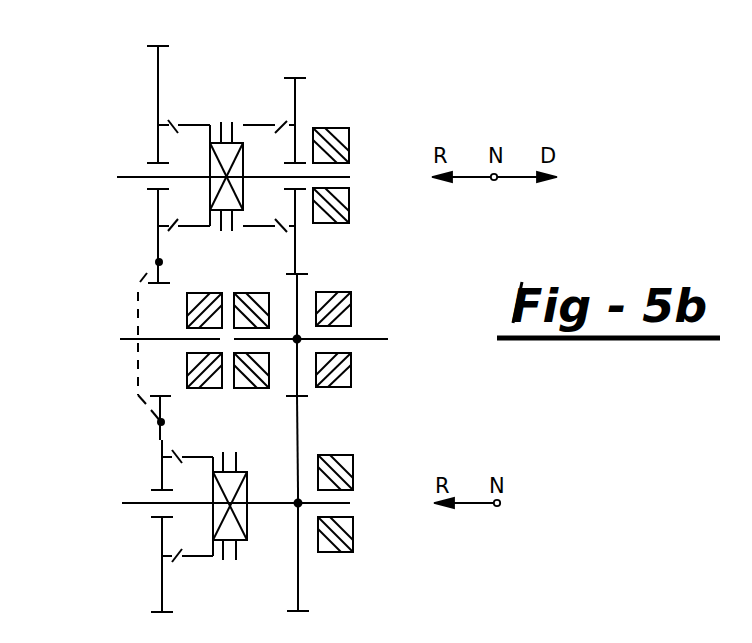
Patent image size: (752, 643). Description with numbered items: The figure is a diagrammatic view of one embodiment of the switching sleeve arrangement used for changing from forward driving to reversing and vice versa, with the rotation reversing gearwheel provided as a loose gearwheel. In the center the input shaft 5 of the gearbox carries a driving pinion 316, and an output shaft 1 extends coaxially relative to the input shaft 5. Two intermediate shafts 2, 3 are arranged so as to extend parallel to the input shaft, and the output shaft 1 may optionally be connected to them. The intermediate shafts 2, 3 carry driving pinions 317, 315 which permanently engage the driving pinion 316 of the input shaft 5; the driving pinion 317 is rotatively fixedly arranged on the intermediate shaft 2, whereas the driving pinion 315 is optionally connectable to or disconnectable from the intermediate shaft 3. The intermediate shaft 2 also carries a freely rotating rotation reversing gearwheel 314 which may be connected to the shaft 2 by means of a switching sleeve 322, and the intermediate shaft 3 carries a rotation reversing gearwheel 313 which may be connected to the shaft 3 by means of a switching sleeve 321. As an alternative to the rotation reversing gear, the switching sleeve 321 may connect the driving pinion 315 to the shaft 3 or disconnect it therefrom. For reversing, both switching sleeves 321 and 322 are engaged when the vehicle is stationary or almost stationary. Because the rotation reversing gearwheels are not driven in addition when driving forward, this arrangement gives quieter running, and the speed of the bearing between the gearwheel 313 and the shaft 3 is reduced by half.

The rotation reversing gearwheel 313 is at (158, 78).
The driving pinion 315 is at (295, 100).
The switching sleeve 321 is at (228, 122).
The intermediate shaft 3 is at (130, 176).
The output shaft 1 is at (153, 340).
The driving pinion 316 is at (297, 295).
The input shaft 5 is at (371, 341).
The intermediate shaft 2 is at (137, 503).
The rotation reversing gearwheel 314 is at (162, 588).
The switching sleeve 322 is at (229, 561).
The driving pinion 317 is at (298, 585).